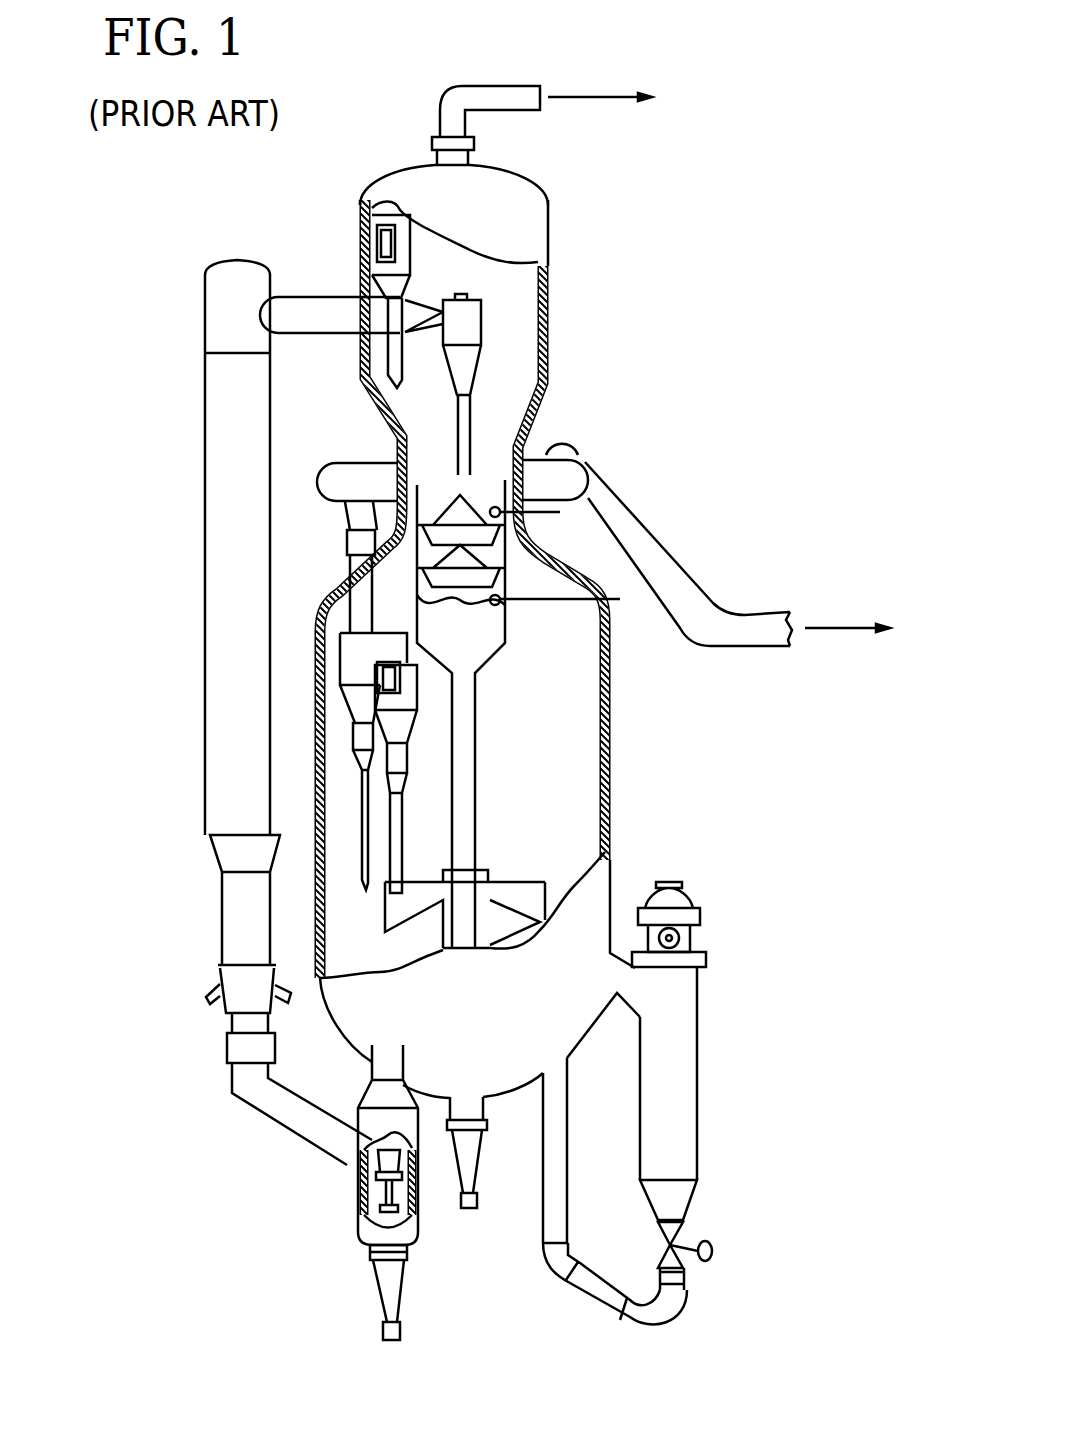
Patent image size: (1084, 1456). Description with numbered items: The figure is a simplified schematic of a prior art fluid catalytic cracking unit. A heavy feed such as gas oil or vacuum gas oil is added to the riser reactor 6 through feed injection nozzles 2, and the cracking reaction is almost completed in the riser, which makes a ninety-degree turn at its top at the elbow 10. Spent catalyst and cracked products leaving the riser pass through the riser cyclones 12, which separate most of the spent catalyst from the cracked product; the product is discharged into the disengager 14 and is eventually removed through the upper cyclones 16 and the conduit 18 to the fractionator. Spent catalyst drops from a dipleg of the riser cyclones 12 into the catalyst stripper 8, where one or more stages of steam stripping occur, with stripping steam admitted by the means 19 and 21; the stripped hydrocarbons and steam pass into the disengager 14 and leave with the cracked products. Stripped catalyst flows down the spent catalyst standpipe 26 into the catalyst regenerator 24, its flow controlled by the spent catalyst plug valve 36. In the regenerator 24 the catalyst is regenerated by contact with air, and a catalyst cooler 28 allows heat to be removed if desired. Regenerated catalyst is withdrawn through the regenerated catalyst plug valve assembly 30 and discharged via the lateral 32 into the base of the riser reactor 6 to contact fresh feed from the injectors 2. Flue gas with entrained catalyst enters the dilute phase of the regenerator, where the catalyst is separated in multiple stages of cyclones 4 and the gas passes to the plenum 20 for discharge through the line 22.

The feed injection nozzles 2 is at (210, 998).
The cyclones 4 is at (353, 710).
The riser reactor 6 is at (230, 622).
The catalyst stripper 8 is at (380, 557).
The elbow 10 is at (205, 322).
The riser cyclones 12 is at (472, 335).
The disengager 14 is at (520, 298).
The upper cyclones 16 is at (370, 264).
The conduit 18 is at (498, 80).
The stripping steam admission means 19 is at (535, 605).
The plenum 20 is at (567, 480).
The stripping steam admission means 21 is at (545, 515).
The line 22 is at (756, 557).
The catalyst regenerator 24 is at (612, 730).
The spent catalyst standpipe 26 is at (480, 825).
The catalyst cooler 28 is at (700, 1070).
The regenerated catalyst plug valve assembly 30 is at (380, 1195).
The lateral 32 is at (268, 1128).
The spent catalyst plug valve 36 is at (493, 1123).